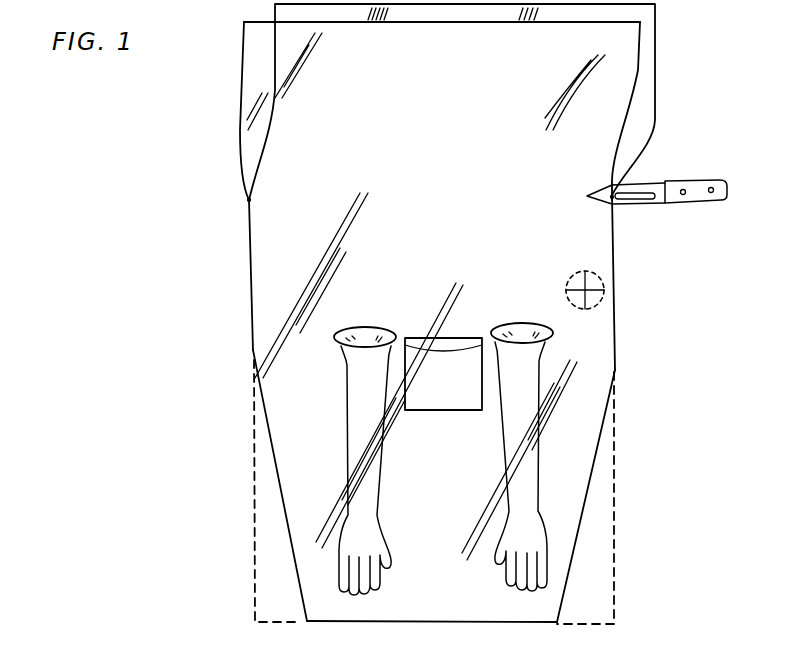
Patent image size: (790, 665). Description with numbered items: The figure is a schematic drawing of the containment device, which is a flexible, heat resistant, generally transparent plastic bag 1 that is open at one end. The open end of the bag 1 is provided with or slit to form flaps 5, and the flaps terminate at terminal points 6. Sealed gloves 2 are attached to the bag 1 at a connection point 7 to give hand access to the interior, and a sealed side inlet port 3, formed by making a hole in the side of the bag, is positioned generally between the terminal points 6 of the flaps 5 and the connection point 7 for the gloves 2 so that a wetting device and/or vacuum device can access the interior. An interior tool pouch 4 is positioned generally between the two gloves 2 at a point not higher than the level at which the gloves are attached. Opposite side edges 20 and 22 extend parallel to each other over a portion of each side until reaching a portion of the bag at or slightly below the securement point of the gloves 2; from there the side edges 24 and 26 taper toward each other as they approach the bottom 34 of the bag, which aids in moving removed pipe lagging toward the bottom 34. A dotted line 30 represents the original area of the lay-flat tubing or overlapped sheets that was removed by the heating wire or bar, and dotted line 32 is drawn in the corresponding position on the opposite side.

The plastic bag 1 is at (445, 331).
The sealed gloves 2 is at (357, 447).
The sealed side port 3 is at (597, 280).
The tool pouch 4 is at (446, 357).
The flaps 5 is at (262, 47).
The terminal points of the flaps 6 is at (249, 200).
The connection point for the sealed gloves 7 is at (335, 334).
The side edge 20 is at (250, 250).
The side edge 22 is at (618, 252).
The tapered side edge 24 is at (282, 520).
The tapered side edge 26 is at (583, 503).
The dotted line 30 is at (252, 580).
The right corner fold line 32 is at (618, 552).
The bottom of the bag 34 is at (423, 607).